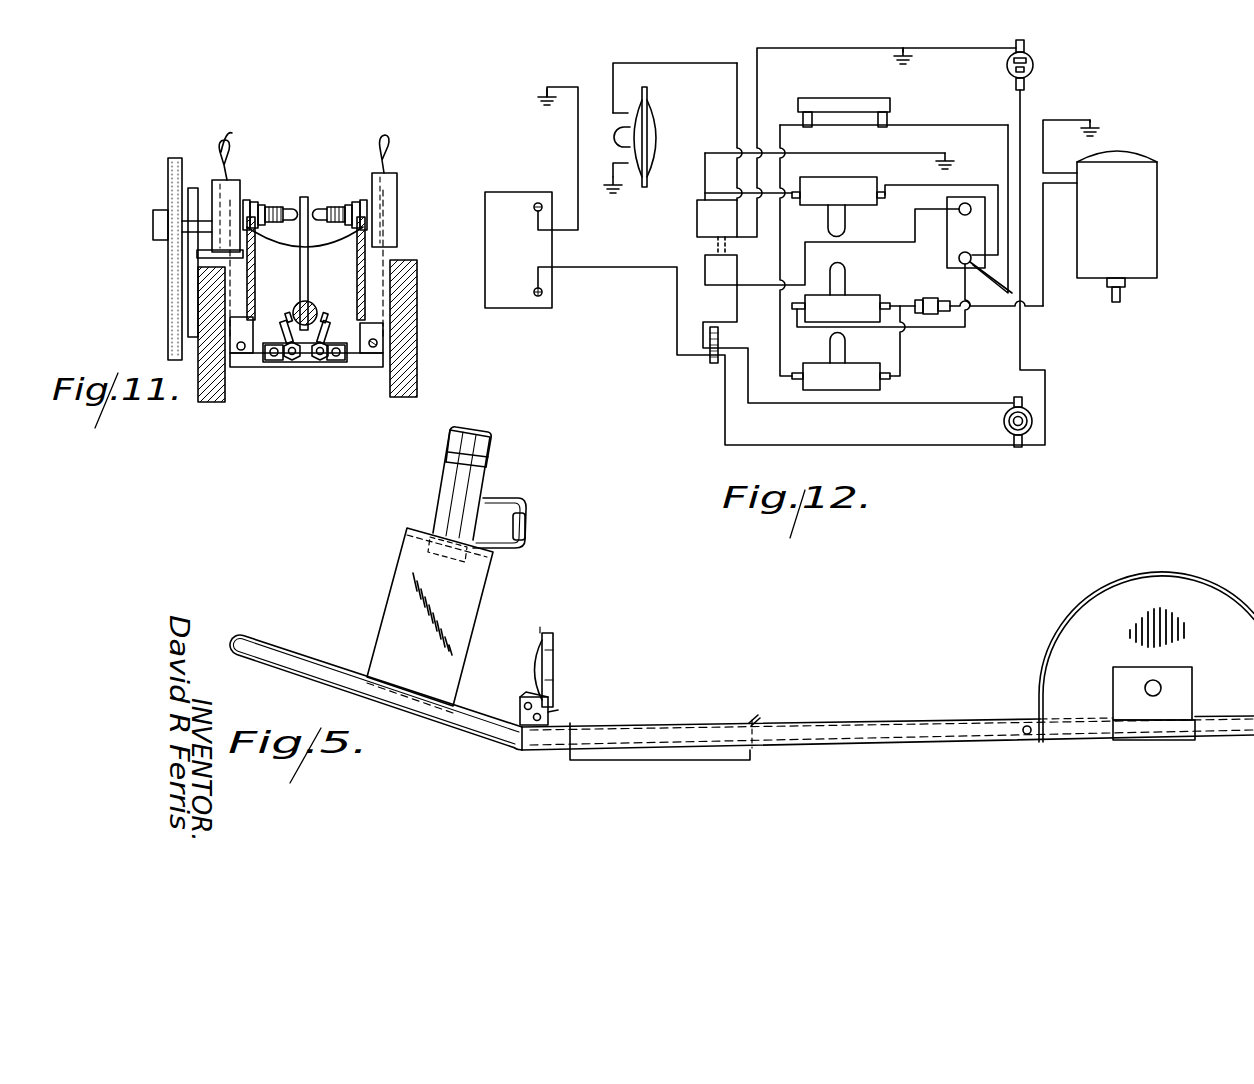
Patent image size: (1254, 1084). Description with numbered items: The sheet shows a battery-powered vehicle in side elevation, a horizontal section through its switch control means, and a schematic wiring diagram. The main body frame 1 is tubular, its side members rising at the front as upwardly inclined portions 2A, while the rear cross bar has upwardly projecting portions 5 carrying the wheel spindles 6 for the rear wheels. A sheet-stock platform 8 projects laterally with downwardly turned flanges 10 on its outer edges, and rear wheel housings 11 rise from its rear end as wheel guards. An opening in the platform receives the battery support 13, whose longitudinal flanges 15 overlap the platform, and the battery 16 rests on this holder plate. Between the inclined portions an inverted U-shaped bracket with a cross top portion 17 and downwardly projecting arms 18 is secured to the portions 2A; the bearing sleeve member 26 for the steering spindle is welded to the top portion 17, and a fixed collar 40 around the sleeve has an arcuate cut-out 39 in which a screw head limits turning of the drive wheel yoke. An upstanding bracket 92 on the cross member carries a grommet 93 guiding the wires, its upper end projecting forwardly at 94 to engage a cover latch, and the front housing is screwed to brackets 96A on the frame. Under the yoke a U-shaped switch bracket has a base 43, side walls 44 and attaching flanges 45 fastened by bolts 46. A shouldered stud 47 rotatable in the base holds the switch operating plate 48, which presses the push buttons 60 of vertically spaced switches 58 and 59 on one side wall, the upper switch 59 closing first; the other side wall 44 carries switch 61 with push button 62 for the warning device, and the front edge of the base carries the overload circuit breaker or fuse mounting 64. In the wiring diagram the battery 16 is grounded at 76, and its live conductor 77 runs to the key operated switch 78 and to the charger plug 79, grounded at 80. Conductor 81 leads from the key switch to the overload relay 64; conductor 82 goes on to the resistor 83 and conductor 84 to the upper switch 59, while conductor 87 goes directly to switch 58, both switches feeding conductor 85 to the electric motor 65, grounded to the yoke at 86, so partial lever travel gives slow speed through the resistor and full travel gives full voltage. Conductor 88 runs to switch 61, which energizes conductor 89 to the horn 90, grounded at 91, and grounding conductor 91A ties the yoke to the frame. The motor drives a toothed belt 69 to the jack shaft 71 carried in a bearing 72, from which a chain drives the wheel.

In FIG. 5, the main body frame 1 is at (507, 742).
In FIG. 5, the upwardly inclined portions 2A is at (308, 668).
In FIG. 5, the upwardly projecting portions 5 is at (1186, 679).
In FIG. 5, the wheel journals or spindles 6 is at (1146, 685).
In FIG. 5, the platform 8 is at (818, 721).
In FIG. 5, the downwardly turned flanges 10 is at (860, 737).
In FIG. 5, the rear wheel housings 11 is at (1055, 624).
In FIG. 5, the battery support 13 is at (687, 760).
In FIG. 5, the longitudinal flanges 15 is at (753, 716).
In FIG. 12, the battery 16 is at (547, 300).
In FIG. 5, the cross top portion 17 is at (407, 527).
In FIG. 5, the downwardly projecting arms 18 is at (400, 600).
In FIG. 5, the bearing sleeve member 26 is at (447, 487).
In FIG. 5, the arcuate cut-out 39 is at (480, 436).
In FIG. 5, the fixed collar 40 is at (450, 447).
In FIG. 11, the base 43 is at (347, 366).
In FIG. 11, the side walls 44 is at (357, 284).
In FIG. 11, the attaching flanges 45 is at (372, 355).
In FIG. 11, the bolts 46 is at (377, 343).
In FIG. 11, the shouldered stud 47 is at (297, 305).
In FIG. 11, the switch operating vane or plate 48 is at (303, 197).
In FIG. 12, the lower switch 58 is at (876, 286).
In FIG. 11, the upper switch 59 is at (220, 190).
In FIG. 12, the upper switch 59 is at (845, 384).
In FIG. 11, the actuating push buttons 60 is at (282, 215).
In FIG. 12, the actuating push buttons 60 is at (841, 347).
In FIG. 11, the switch 61 is at (392, 210).
In FIG. 12, the switch 61 is at (838, 178).
In FIG. 11, the push button 62 is at (325, 215).
In FIG. 12, the push button 62 is at (845, 219).
In FIG. 11, the overload circuit breaker or fuse mounting 64 is at (285, 363).
In FIG. 12, the overload circuit breaker or fuse mounting 64 is at (957, 231).
In FIG. 12, the electric motor 65 is at (1157, 214).
In FIG. 11, the toothed belt 69 is at (168, 322).
In FIG. 11, the jack shaft 71 is at (155, 225).
In FIG. 11, the bearing 72 is at (185, 245).
In FIG. 12, the ground 76 is at (545, 108).
In FIG. 12, the live conductor 77 is at (725, 403).
In FIG. 12, the key operated switch 78 is at (1033, 421).
In FIG. 12, the female plug 79 is at (1034, 66).
In FIG. 12, the ground 80 is at (912, 66).
In FIG. 12, the conductor 81 is at (920, 404).
In FIG. 12, the conductor 82 is at (1010, 140).
In FIG. 12, the resistor 83 is at (829, 110).
In FIG. 12, the conductor 84 is at (780, 270).
In FIG. 12, the conductor 85 is at (990, 309).
In FIG. 12, the ground 86 is at (1097, 129).
In FIG. 12, the conductor 87 is at (940, 314).
In FIG. 12, the conductor 88 is at (980, 179).
In FIG. 12, the conductor 89 is at (697, 219).
In FIG. 12, the horn 90 is at (655, 133).
In FIG. 5, the horn 90 is at (553, 648).
In FIG. 12, the ground 91 is at (614, 193).
In FIG. 12, the grounding conductor 91A is at (835, 41).
In FIG. 5, the upstanding bracket 92 is at (513, 548).
In FIG. 12, the grommet 93 is at (718, 246).
In FIG. 5, the grommet 93 is at (527, 527).
In FIG. 5, the forwardly projecting portion 94 is at (511, 498).
In FIG. 5, the brackets 96A is at (520, 700).